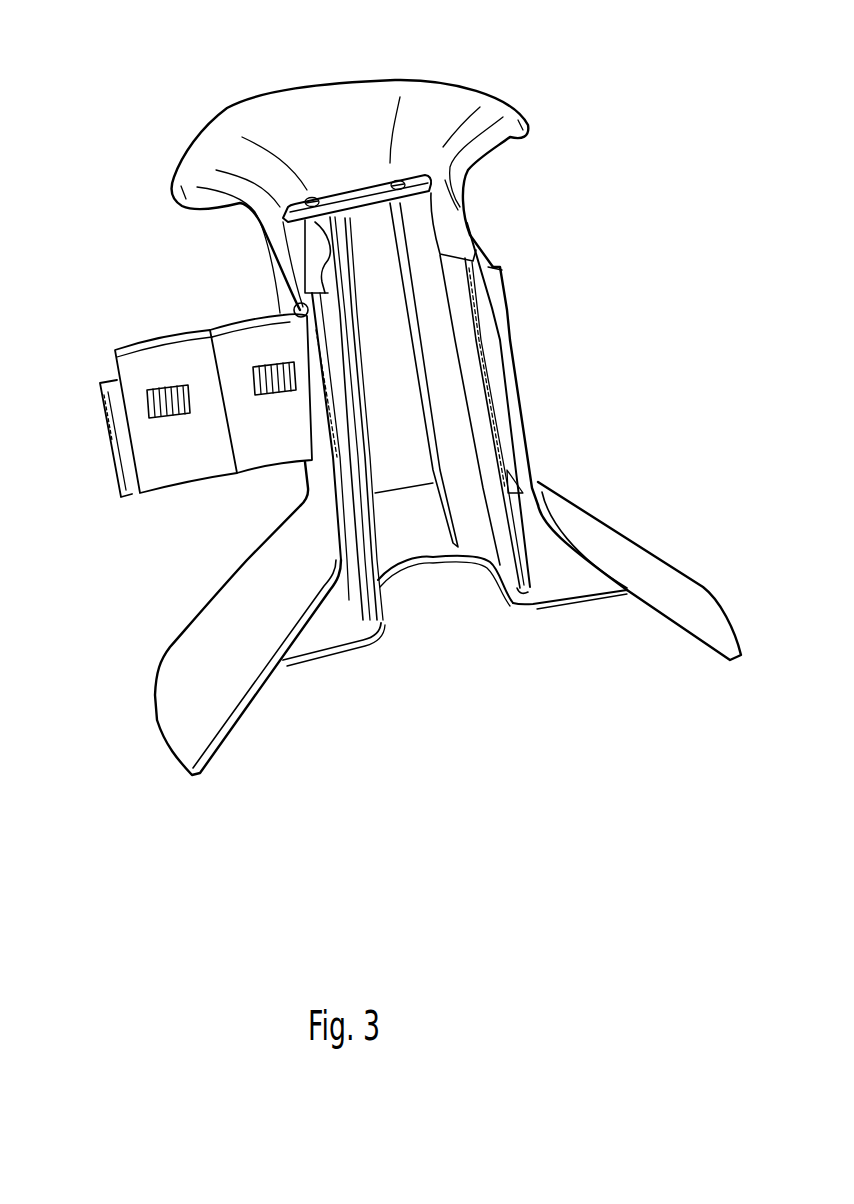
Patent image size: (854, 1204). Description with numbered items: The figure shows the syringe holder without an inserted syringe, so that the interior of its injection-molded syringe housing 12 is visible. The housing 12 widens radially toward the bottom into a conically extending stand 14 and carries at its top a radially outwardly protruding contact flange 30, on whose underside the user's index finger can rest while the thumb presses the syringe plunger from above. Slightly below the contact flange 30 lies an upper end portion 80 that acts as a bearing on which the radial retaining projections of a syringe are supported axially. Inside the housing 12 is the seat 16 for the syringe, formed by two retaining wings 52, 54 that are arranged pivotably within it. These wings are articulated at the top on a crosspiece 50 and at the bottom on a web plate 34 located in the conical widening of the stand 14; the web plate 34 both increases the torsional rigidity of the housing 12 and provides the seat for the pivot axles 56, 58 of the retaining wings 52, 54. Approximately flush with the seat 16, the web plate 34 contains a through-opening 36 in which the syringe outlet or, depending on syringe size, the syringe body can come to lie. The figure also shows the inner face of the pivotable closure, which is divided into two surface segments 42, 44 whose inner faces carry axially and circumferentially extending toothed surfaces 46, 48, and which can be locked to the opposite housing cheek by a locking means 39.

The syringe housing 12 is at (665, 498).
The stand 14 is at (192, 656).
The seat 16 is at (468, 414).
The contact flange 30 is at (219, 150).
The web plate 34 is at (557, 577).
The through-opening 36 is at (432, 597).
The locking means 39 is at (100, 408).
The first surface segment 42 is at (158, 352).
The second surface segment 44 is at (245, 333).
The toothed surface 46 is at (176, 419).
The toothed surface 48 is at (270, 396).
The crosspiece 50 is at (355, 184).
The retaining wing 52 is at (467, 528).
The retaining wing 54 is at (373, 558).
The pivot axle 56 is at (397, 182).
The pivot axle 58 is at (311, 198).
The upper end portion 80 is at (485, 241).